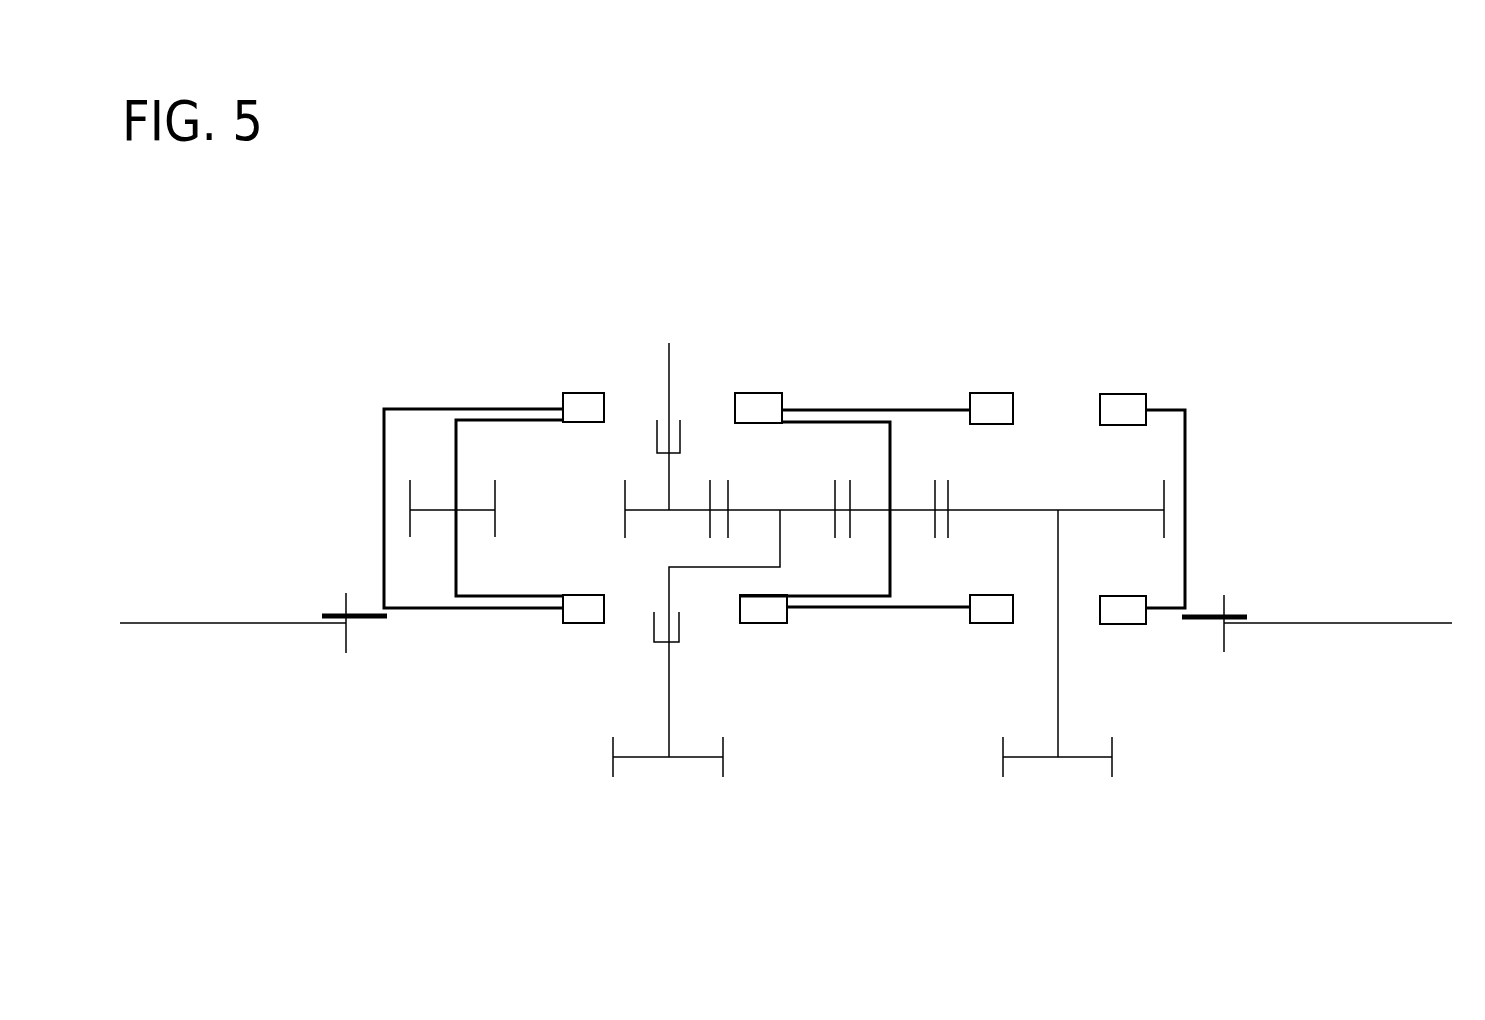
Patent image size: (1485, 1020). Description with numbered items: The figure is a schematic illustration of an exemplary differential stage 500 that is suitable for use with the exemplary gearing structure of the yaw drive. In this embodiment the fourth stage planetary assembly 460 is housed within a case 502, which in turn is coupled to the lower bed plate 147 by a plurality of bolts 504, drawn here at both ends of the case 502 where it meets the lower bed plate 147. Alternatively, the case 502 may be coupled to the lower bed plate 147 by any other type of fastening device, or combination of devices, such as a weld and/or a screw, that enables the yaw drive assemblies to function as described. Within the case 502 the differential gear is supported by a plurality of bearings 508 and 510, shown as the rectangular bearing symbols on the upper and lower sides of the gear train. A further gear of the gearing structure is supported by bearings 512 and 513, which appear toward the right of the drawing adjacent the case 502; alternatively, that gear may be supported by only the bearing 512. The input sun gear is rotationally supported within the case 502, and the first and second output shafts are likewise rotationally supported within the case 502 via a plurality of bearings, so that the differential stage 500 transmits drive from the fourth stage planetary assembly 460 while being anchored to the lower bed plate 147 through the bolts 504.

The differential stage 500 is at (1090, 207).
The fourth stage planetary assembly 460 is at (270, 414).
The lower bed plate 147 is at (180, 623).
The case 502 is at (1188, 446).
The bolts 504 is at (346, 602).
The bearing 508 is at (583, 393).
The bearing 510 is at (583, 623).
The bearing 512 is at (992, 624).
The bearing 513 is at (1123, 394).